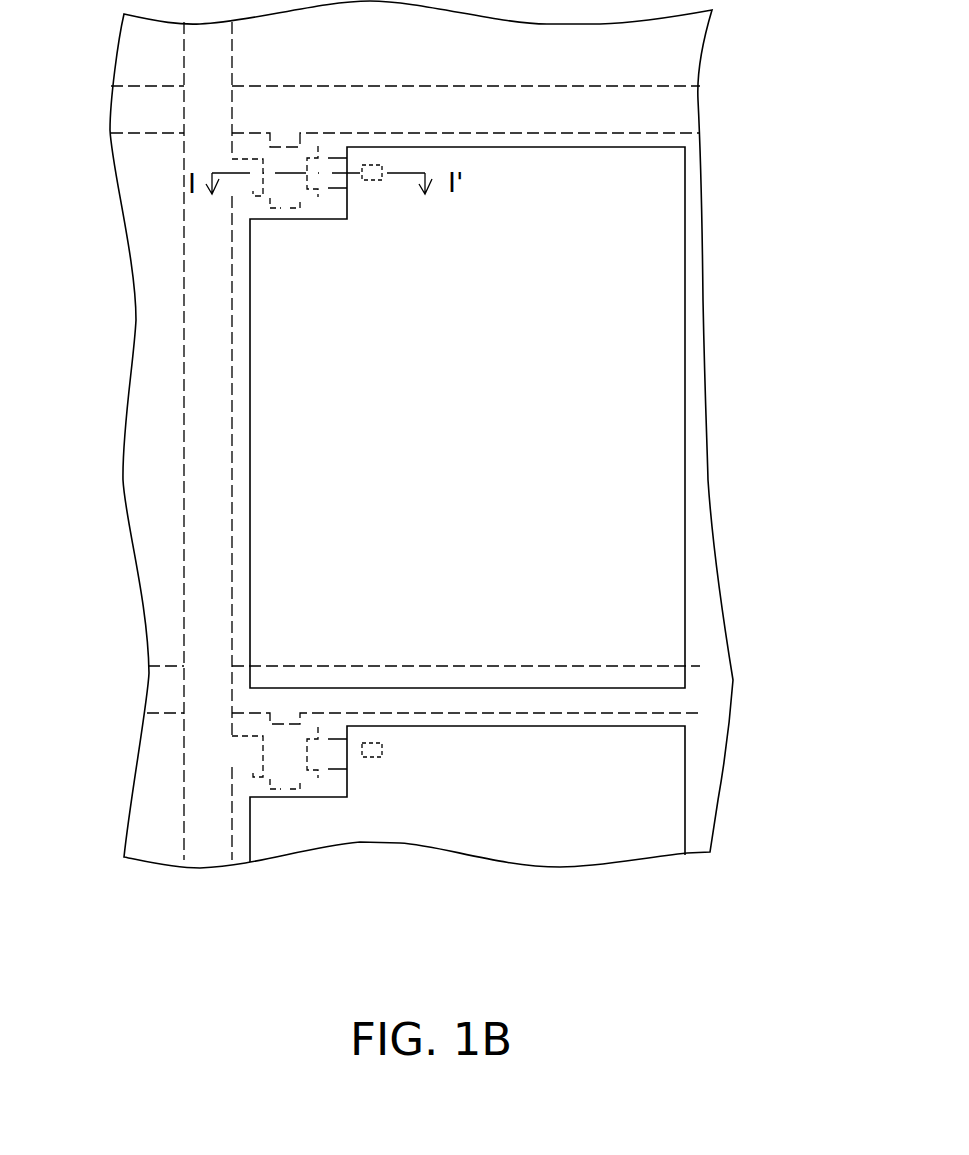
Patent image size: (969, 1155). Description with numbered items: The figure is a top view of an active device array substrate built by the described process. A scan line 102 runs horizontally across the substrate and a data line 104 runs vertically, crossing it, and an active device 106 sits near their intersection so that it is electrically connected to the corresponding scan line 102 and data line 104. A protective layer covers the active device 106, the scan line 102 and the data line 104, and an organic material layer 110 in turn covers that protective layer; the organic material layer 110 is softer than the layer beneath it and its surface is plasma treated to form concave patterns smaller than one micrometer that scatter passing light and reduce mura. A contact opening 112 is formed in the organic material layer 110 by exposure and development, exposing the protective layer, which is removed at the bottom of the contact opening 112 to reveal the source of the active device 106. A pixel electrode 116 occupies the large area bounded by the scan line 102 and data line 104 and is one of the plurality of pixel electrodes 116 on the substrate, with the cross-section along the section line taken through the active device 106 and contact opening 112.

The scan line 102 is at (675, 102).
The data line 104 is at (205, 823).
The active device 106 is at (247, 193).
The organic material layer 110 is at (695, 795).
The contact opening 112 is at (368, 760).
The pixel electrode 116 is at (672, 475).